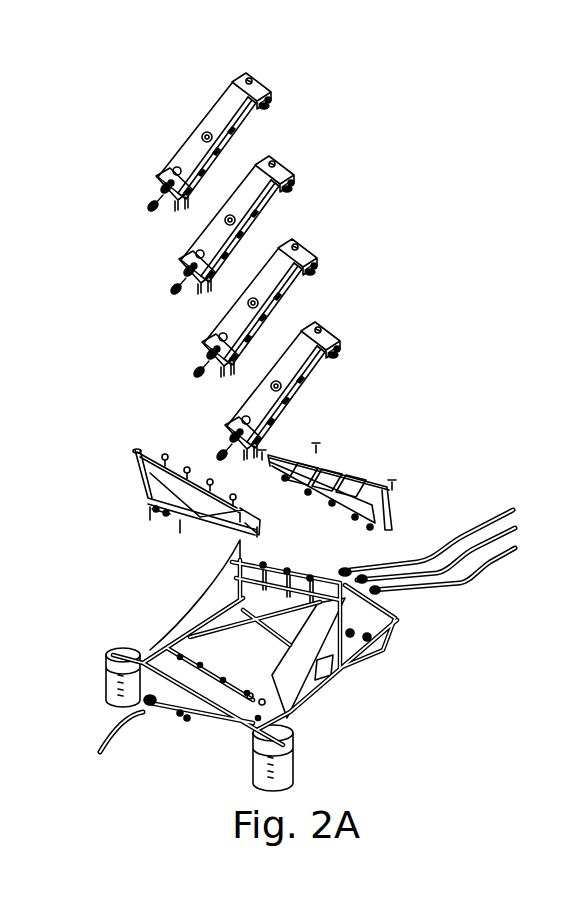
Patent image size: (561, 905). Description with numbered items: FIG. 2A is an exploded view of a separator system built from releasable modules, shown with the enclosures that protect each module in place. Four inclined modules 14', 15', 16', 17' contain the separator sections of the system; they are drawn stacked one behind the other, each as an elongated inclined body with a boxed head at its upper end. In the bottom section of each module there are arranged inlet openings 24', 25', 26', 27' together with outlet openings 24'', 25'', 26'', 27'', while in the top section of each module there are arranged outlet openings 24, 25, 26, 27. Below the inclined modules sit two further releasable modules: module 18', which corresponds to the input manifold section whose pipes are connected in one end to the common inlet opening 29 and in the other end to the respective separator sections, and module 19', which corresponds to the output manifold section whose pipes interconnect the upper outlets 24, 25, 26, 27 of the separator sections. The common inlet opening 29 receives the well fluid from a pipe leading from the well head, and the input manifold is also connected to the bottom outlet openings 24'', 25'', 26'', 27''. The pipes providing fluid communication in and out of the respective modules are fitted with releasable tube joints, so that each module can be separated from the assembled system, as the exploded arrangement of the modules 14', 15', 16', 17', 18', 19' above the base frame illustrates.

The releasable module 14' is at (208, 138).
The releasable module 15' is at (236, 212).
The releasable module 16' is at (259, 293).
The releasable module 17' is at (282, 375).
The releasable module 18' is at (156, 493).
The releasable module 19' is at (333, 464).
The outlet opening 24 is at (313, 118).
The inlet opening 24' is at (114, 193).
The outlet opening 24'' is at (105, 221).
The outlet opening 25 is at (335, 204).
The inlet opening 25' is at (136, 279).
The outlet opening 25'' is at (129, 305).
The outlet opening 26 is at (357, 286).
The inlet opening 26' is at (159, 359).
The outlet opening 26'' is at (149, 381).
The outlet opening 27 is at (382, 365).
The inlet opening 27' is at (195, 421).
The outlet opening 27'' is at (167, 433).
The common inlet opening 29 is at (160, 520).